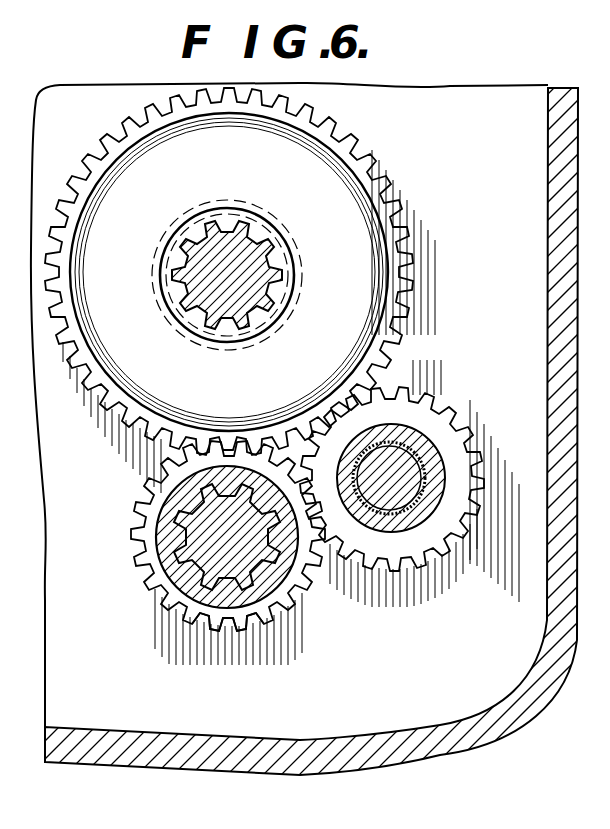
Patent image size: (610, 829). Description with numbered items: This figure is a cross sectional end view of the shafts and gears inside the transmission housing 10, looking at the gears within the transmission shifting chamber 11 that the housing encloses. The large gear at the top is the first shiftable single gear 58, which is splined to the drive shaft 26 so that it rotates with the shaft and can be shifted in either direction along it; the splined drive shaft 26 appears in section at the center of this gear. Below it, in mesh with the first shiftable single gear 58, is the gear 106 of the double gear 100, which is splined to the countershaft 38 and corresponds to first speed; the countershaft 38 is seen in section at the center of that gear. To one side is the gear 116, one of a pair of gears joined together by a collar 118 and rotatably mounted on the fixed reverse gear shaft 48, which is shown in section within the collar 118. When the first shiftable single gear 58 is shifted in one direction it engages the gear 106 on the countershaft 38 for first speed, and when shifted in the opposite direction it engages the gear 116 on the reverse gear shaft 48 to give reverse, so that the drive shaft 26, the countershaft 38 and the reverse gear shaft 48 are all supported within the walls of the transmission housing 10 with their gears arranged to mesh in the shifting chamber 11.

The transmission housing 10 is at (437, 762).
The transmission shifting chamber 11 is at (437, 690).
The drive shaft 26 is at (253, 252).
The countershaft 38 is at (270, 590).
The reverse gear shaft 48 is at (410, 450).
The first shiftable single gear 58 is at (392, 308).
The double gear 100 is at (211, 613).
The gear 106 is at (273, 608).
The gear 116 is at (478, 483).
The collar 118 is at (447, 467).